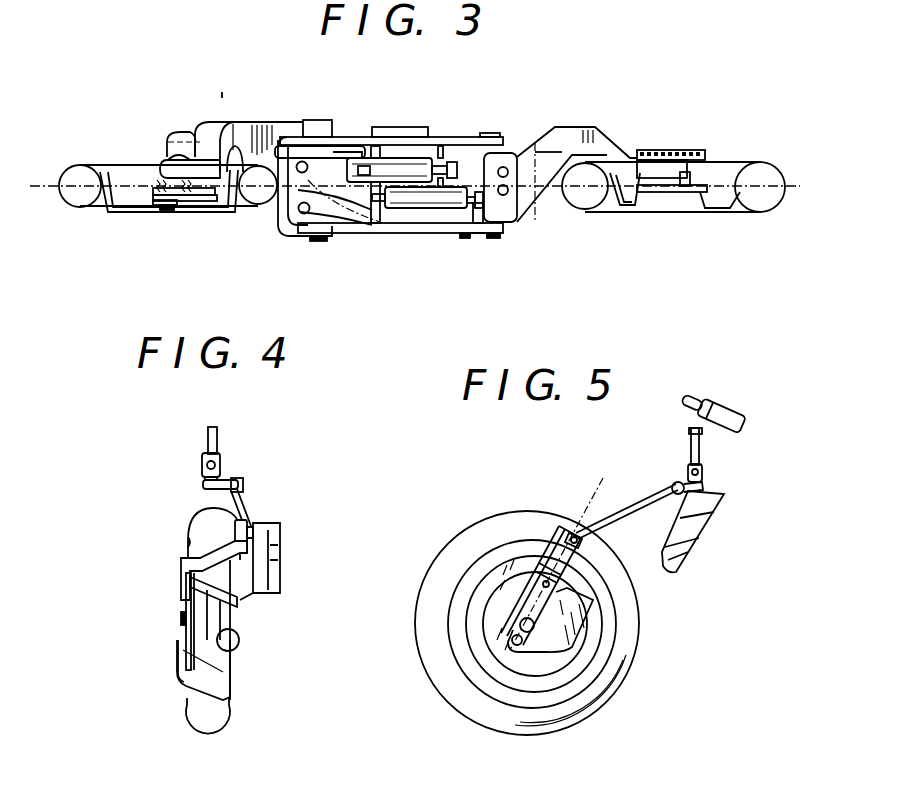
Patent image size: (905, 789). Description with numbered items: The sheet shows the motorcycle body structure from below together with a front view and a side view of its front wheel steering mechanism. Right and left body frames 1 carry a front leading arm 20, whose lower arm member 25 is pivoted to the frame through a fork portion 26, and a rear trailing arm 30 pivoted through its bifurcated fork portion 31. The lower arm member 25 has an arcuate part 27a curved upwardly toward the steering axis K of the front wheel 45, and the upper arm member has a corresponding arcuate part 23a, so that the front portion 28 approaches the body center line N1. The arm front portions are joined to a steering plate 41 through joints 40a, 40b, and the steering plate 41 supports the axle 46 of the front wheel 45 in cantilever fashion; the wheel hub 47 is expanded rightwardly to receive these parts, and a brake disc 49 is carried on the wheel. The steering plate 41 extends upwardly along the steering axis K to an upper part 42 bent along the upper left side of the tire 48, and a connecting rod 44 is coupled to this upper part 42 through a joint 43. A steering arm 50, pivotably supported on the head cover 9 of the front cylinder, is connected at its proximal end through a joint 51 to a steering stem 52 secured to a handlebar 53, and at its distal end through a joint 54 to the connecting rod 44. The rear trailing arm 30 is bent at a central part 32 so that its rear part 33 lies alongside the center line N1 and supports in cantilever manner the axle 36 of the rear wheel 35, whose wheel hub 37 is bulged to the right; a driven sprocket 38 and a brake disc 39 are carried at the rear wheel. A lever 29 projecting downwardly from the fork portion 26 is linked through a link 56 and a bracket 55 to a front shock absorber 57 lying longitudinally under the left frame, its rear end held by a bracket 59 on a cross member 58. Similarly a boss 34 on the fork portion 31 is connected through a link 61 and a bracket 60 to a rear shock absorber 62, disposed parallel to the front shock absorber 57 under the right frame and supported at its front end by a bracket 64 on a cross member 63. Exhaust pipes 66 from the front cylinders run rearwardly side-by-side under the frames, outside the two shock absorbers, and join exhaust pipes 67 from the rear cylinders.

In FIG. 3, the body frame 1 is at (434, 137).
In FIG. 5, the head cover 9 is at (690, 550).
In FIG. 3, the swingable arm 20 is at (232, 72).
In FIG. 3, the arcuate part 23a is at (173, 131).
In FIG. 3, the lower arm member 25 is at (249, 119).
In FIG. 3, the fork portion 26 is at (280, 232).
In FIG. 3, the arcuate part 27a is at (208, 121).
In FIG. 3, the front portion 28 is at (167, 157).
In FIG. 4, the front portion 28 is at (239, 640).
In FIG. 5, the front portion 28 is at (535, 655).
In FIG. 3, the lever 29 is at (290, 146).
In FIG. 3, the swingable arm 30 is at (603, 129).
In FIG. 3, the fork portion 31 is at (537, 207).
In FIG. 3, the central part 32 is at (571, 130).
In FIG. 3, the rear part 33 is at (692, 176).
In FIG. 3, the boss 34 is at (483, 235).
In FIG. 3, the rear wheel 35 is at (773, 162).
In FIG. 3, the axle 36 is at (670, 150).
In FIG. 3, the wheel hub 37 is at (637, 206).
In FIG. 3, the driven sprocket 38 is at (700, 150).
In FIG. 3, the brake disc 39 is at (707, 192).
In FIG. 3, the joint 40a is at (162, 170).
In FIG. 4, the joint 40a is at (212, 660).
In FIG. 3, the joint 40b is at (190, 196).
In FIG. 4, the joint 40b is at (215, 596).
In FIG. 3, the steering plate 41 is at (190, 196).
In FIG. 4, the steering plate 41 is at (200, 603).
In FIG. 5, the steering plate 41 is at (527, 567).
In FIG. 4, the upper part 42 is at (232, 524).
In FIG. 5, the upper part 42 is at (563, 528).
In FIG. 4, the joint 43 is at (281, 528).
In FIG. 5, the joint 43 is at (584, 542).
In FIG. 4, the connecting rod 44 is at (250, 506).
In FIG. 5, the connecting rod 44 is at (640, 507).
In FIG. 3, the front wheel 45 is at (79, 212).
In FIG. 4, the front wheel 45 is at (197, 733).
In FIG. 5, the front wheel 45 is at (470, 723).
In FIG. 3, the axle 46 is at (167, 210).
In FIG. 4, the axle 46 is at (181, 625).
In FIG. 5, the axle 46 is at (520, 622).
In FIG. 3, the wheel hub 47 is at (214, 205).
In FIG. 4, the wheel hub 47 is at (177, 664).
In FIG. 4, the tire 48 is at (188, 523).
In FIG. 5, the tire 48 is at (630, 635).
In FIG. 3, the brake disc 49 is at (155, 206).
In FIG. 4, the brake disc 49 is at (188, 577).
In FIG. 4, the steering arm 50 is at (228, 480).
In FIG. 5, the steering arm 50 is at (676, 482).
In FIG. 4, the joint 51 is at (202, 467).
In FIG. 5, the joint 51 is at (704, 477).
In FIG. 4, the steering stem 52 is at (208, 437).
In FIG. 5, the steering stem 52 is at (700, 450).
In FIG. 5, the handlebar 53 is at (693, 400).
In FIG. 4, the joint 54 is at (243, 485).
In FIG. 5, the joint 54 is at (719, 523).
In FIG. 3, the bracket 55 is at (350, 137).
In FIG. 3, the link 56 is at (328, 113).
In FIG. 3, the front shock absorber 57 is at (393, 158).
In FIG. 3, the cross member 58 is at (451, 181).
In FIG. 3, the bracket 59 is at (451, 162).
In FIG. 3, the bracket 60 is at (467, 234).
In FIG. 3, the link 61 is at (485, 220).
In FIG. 3, the rear shock absorber 62 is at (418, 208).
In FIG. 3, the cross member 63 is at (368, 196).
In FIG. 3, the bracket 64 is at (385, 214).
In FIG. 3, the exhaust pipes 66 is at (305, 161).
In FIG. 3, the exhaust pipes 67 is at (505, 167).
In FIG. 3, the center line N1 is at (77, 176).
In FIG. 5, the steering axis K is at (603, 478).